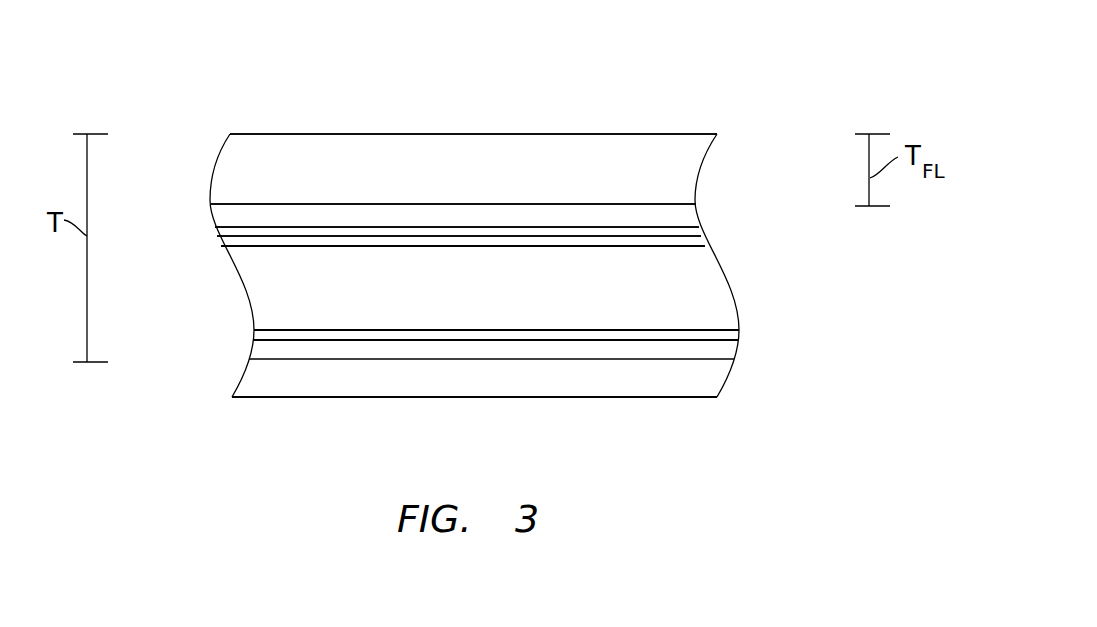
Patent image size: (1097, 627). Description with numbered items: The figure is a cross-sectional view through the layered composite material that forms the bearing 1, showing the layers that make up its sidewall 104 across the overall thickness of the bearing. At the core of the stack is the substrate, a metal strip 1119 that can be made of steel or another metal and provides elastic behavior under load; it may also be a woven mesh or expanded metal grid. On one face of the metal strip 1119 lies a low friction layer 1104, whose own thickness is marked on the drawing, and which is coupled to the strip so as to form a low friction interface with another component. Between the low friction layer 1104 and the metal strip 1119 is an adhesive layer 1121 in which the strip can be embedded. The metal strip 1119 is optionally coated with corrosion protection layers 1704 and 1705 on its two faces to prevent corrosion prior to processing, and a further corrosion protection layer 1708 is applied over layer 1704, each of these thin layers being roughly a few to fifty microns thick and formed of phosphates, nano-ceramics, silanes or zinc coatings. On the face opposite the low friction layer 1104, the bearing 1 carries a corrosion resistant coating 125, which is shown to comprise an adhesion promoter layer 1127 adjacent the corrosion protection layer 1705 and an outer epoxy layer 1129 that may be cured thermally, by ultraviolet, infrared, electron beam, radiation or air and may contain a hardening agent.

The bearing 1 is at (739, 57).
The sidewall 104 is at (737, 303).
The bottom portion 125 is at (747, 340).
The low friction layer 1104 is at (213, 172).
The adhesive layer 1121 is at (212, 219).
The corrosion protection layer 1708 is at (700, 230).
The corrosion protection layer 1704 is at (705, 238).
The metal strip 1119 is at (233, 277).
The adhesion promoter layer 1127 is at (252, 351).
The corrosion protection layer 1705 is at (740, 332).
The epoxy layer 1129 is at (235, 385).